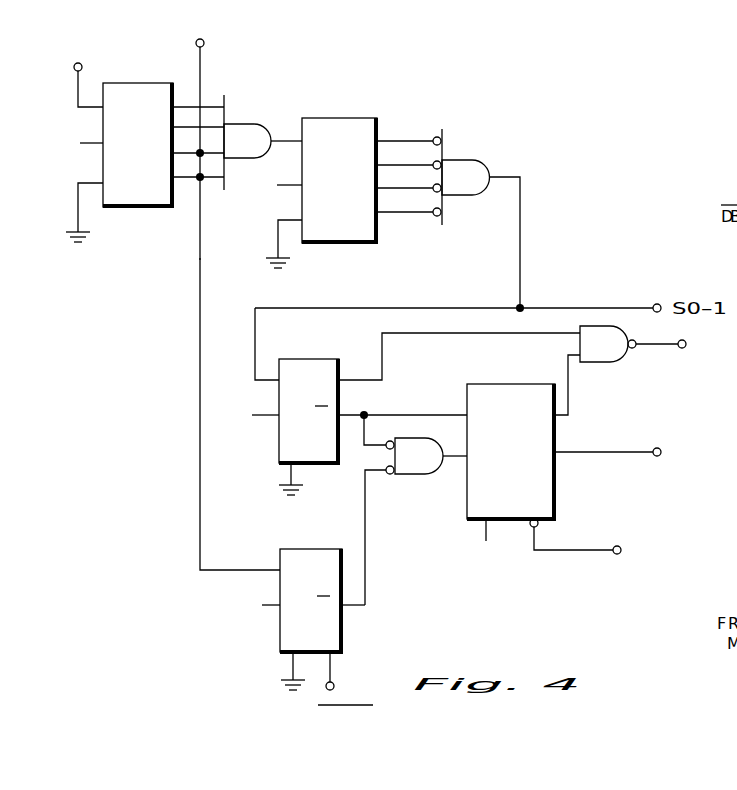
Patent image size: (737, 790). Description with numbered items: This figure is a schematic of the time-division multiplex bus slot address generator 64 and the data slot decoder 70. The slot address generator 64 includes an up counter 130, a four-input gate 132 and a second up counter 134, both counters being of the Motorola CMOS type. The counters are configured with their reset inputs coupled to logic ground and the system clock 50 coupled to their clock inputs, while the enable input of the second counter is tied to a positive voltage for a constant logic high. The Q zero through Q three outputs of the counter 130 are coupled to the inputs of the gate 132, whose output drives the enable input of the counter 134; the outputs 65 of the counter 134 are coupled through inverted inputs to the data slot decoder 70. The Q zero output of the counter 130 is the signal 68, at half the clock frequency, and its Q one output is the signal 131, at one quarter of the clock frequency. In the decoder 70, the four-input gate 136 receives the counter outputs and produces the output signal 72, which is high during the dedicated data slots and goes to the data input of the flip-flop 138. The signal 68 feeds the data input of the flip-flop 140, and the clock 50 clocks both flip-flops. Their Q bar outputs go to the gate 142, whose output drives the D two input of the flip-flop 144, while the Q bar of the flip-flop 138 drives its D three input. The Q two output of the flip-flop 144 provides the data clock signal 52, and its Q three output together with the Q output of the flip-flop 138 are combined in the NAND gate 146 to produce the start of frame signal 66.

The clock signal 50 is at (86, 144).
The data clock signal 52 is at (629, 449).
The time-division multiplex bus slot address generator 64 is at (144, 144).
The outputs of slot address generator 65 is at (420, 122).
The start of frame signal 66 is at (660, 346).
The output of slot address generator 68 is at (200, 288).
The data slot decoder 70 is at (324, 185).
The output signal 72 is at (520, 248).
The up counter 130 is at (122, 83).
The signal 131 is at (201, 61).
The 4-input NAND gate 132 is at (250, 123).
The up counter 134 is at (318, 118).
The 4-input NOR gate 136 is at (476, 160).
The flip-flop 138 is at (312, 359).
The flip-flop 140 is at (302, 549).
The NOR gate 142 is at (412, 474).
The flip-flop 144 is at (507, 384).
The NAND gate 146 is at (602, 362).